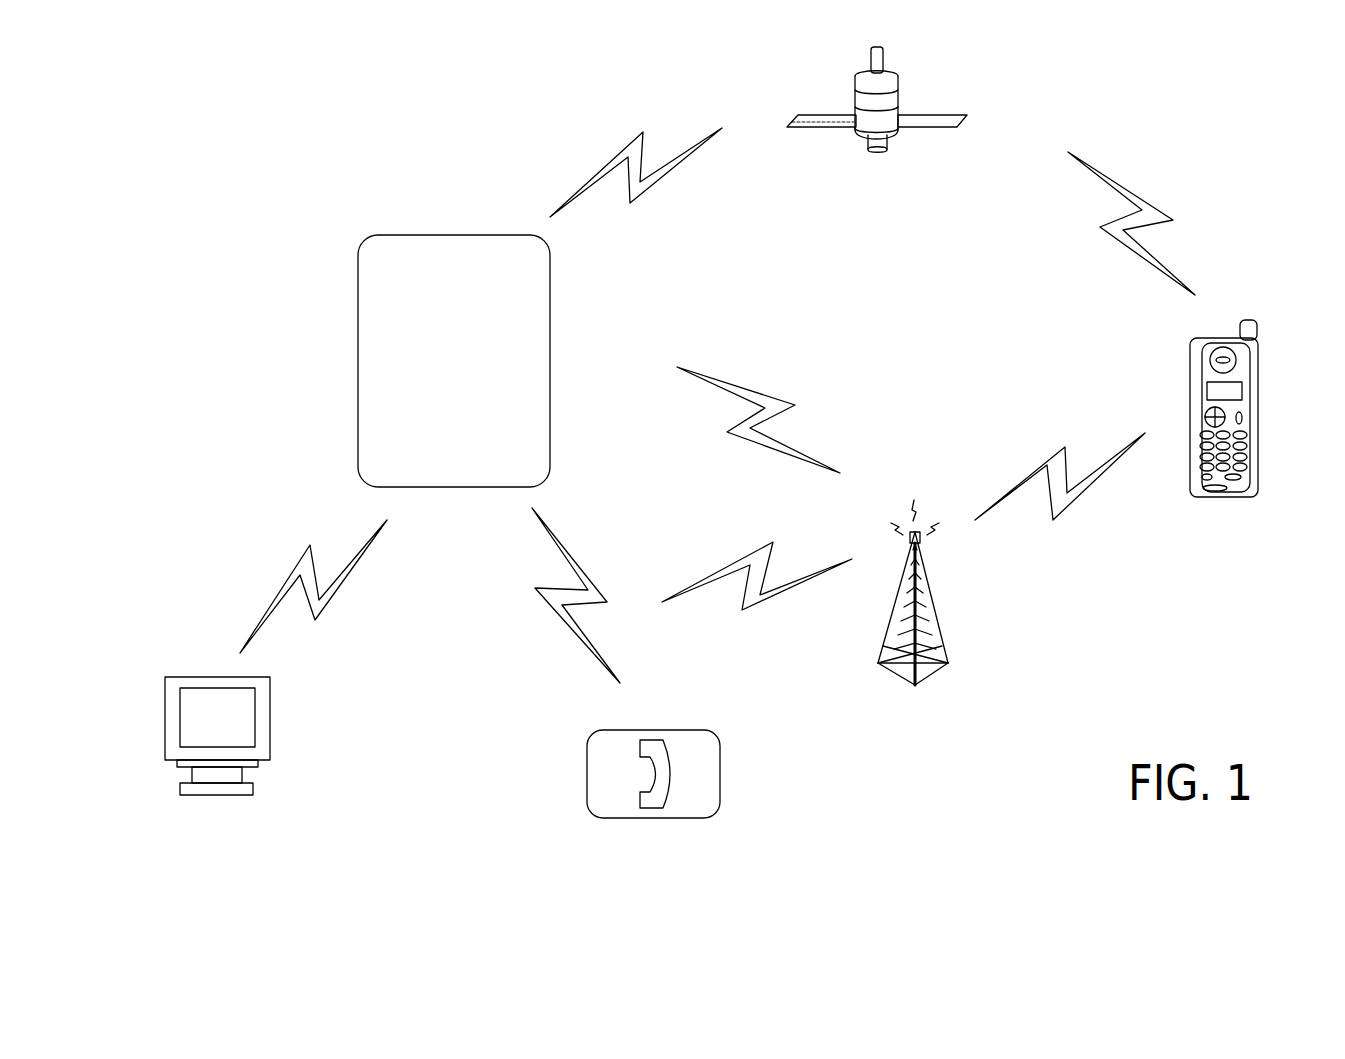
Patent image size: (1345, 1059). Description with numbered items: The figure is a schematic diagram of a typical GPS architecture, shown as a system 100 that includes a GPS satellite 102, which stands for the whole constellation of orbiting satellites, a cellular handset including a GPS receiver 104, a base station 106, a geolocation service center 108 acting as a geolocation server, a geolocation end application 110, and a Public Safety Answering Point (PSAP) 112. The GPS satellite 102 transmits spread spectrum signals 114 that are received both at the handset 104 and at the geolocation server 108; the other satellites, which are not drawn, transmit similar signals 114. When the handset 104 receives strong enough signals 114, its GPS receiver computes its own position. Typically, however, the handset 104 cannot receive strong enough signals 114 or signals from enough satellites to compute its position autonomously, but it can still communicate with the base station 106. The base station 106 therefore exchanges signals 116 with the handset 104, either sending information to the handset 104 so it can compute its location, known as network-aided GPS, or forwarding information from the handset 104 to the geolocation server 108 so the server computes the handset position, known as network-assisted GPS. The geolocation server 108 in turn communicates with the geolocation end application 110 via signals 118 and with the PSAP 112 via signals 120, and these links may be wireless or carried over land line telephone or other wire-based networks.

The system 100 is at (358, 126).
The GPS satellite 102 is at (930, 112).
The cellular handset including a GPS receiver 104 is at (1258, 408).
The base station 106 is at (942, 637).
The geolocation service center 108 is at (455, 235).
The geolocation end application 110 is at (218, 676).
The Public Safety Answering Point (PSAP) 112 is at (630, 730).
The spread spectrum signals 114 is at (623, 148).
The signals 116 is at (720, 375).
The signals 118 is at (297, 560).
The signals 120 is at (560, 543).